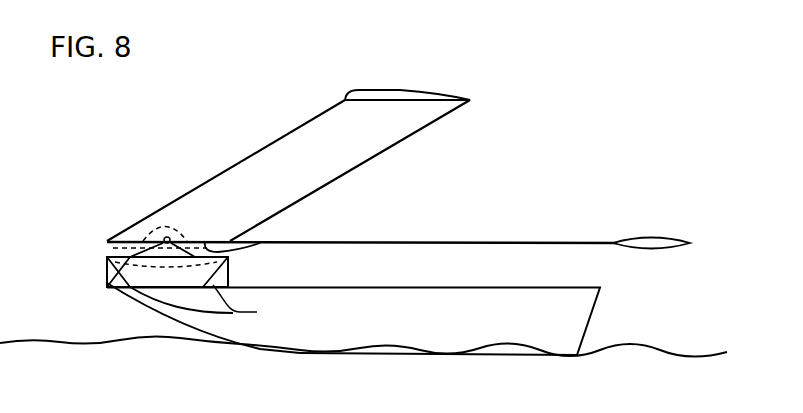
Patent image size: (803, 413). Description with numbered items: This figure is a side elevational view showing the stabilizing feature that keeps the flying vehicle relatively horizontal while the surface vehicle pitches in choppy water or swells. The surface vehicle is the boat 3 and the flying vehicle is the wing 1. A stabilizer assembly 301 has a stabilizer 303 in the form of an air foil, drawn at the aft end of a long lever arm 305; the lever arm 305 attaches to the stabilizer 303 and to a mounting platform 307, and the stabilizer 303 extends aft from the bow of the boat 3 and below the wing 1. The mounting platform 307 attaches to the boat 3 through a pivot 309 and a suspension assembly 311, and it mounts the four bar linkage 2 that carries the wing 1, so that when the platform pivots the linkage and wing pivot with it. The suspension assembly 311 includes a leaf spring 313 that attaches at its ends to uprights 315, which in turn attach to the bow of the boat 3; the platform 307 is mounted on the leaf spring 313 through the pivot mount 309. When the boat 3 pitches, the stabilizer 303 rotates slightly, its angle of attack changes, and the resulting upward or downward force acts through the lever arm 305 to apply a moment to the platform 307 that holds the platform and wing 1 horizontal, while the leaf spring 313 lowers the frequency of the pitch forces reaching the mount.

The wing 1 is at (405, 90).
The four bar linkage 2 is at (255, 150).
The boat 3 is at (570, 313).
The stabilizer assembly 301 is at (505, 218).
The tail stabilizer 303 is at (653, 236).
The lever arm 305 is at (383, 242).
The mounting platform 307 is at (250, 242).
The pivot 309 is at (166, 237).
The suspension assembly 311 is at (107, 283).
The leaf spring 313 is at (228, 258).
The uprights 315 is at (256, 308).